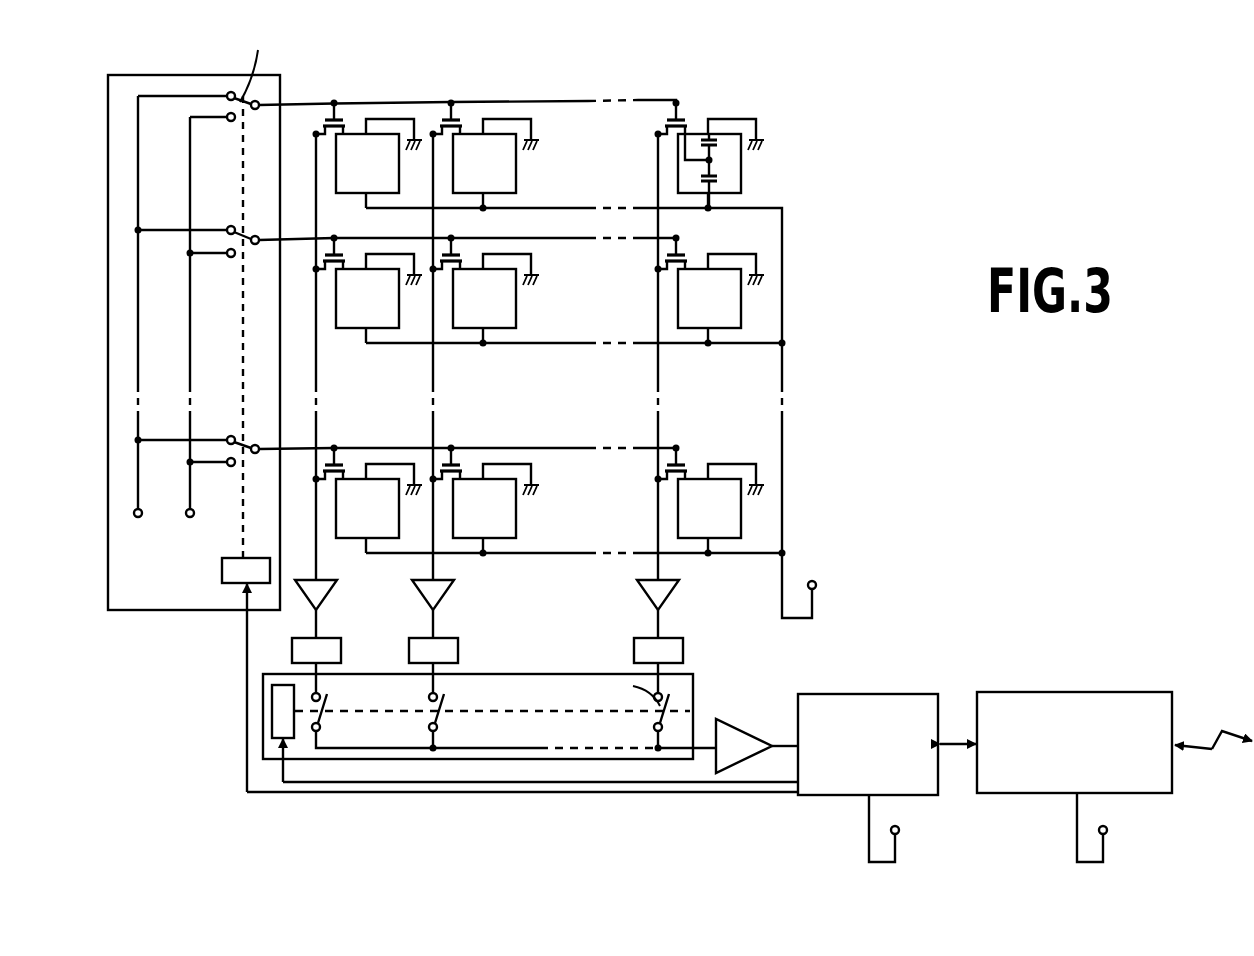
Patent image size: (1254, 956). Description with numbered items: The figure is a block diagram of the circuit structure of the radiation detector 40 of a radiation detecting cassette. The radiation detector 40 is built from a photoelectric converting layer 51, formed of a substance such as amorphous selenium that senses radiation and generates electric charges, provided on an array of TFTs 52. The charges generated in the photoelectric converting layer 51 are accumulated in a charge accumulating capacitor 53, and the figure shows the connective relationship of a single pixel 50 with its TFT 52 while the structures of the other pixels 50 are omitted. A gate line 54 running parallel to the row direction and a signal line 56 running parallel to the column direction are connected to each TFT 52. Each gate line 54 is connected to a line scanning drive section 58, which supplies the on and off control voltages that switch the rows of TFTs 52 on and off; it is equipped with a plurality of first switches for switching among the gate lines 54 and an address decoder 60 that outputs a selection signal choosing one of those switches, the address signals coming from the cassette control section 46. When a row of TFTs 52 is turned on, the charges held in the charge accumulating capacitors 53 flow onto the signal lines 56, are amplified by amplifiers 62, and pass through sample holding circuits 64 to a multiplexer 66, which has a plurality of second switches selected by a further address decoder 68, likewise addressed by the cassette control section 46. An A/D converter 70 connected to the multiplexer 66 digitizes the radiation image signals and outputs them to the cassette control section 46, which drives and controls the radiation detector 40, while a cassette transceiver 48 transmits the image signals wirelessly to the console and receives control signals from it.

The radiation detector 40 is at (558, 314).
The cassette control section 46 is at (868, 694).
The cassette transceiver 48 is at (1075, 692).
The pixel 50 is at (628, 138).
The photoelectric converting layer 51 is at (717, 179).
The TFT 52 is at (667, 122).
The charge accumulating capacitor 53 is at (717, 143).
The gate line 54 is at (637, 100).
The signal line 56 is at (657, 163).
The line scanning drive section 58 is at (163, 610).
The address decoder 60 is at (222, 572).
The amplifier 62 is at (672, 595).
The sample holding circuit 64 is at (689, 648).
The multiplexer 66 is at (556, 673).
The address decoder 68 is at (283, 685).
The A/D converter 70 is at (732, 722).